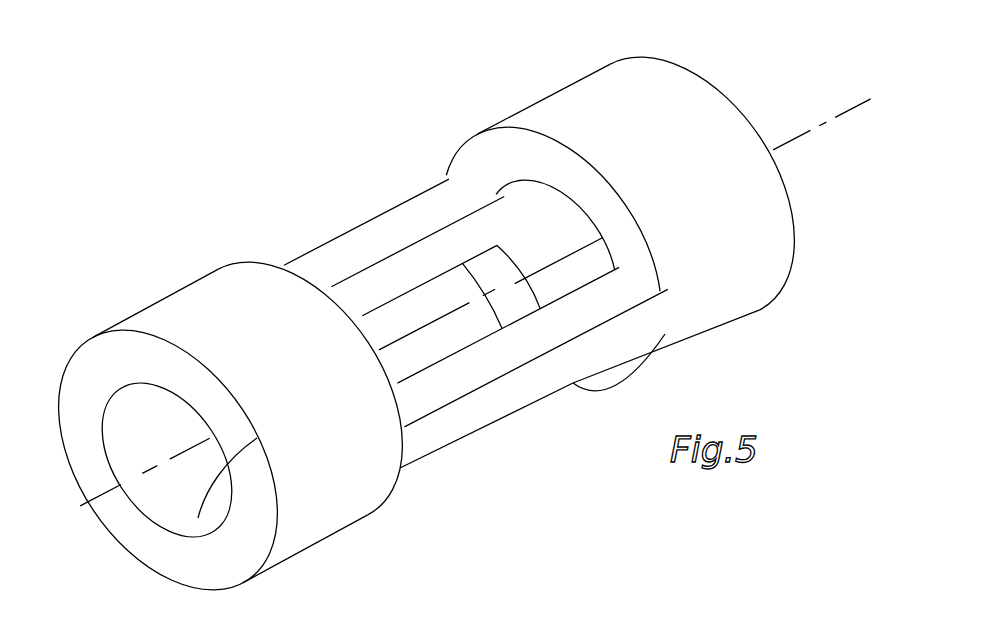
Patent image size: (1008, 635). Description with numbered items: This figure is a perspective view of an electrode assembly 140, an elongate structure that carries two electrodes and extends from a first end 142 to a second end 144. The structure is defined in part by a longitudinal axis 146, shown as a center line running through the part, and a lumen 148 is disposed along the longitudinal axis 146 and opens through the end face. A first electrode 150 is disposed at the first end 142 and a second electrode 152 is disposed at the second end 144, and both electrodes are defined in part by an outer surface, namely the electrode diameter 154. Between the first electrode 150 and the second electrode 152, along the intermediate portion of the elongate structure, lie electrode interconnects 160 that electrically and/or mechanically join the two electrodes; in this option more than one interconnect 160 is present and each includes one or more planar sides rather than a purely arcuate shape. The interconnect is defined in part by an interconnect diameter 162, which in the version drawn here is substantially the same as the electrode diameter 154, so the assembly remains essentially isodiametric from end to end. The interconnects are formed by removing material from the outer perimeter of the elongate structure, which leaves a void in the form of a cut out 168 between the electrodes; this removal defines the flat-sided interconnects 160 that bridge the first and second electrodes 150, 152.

The electrode assembly 140 is at (176, 119).
The first end 142 is at (733, 93).
The second end 144 is at (82, 474).
The longitudinal axis 146 is at (178, 455).
The lumen 148 is at (257, 438).
The first electrode 150 is at (636, 57).
The second electrode 152 is at (74, 359).
The electrode diameter 154 is at (720, 335).
The electrode interconnect 160 is at (348, 238).
The interconnect diameter 162 is at (543, 387).
The cut out 168 is at (475, 463).